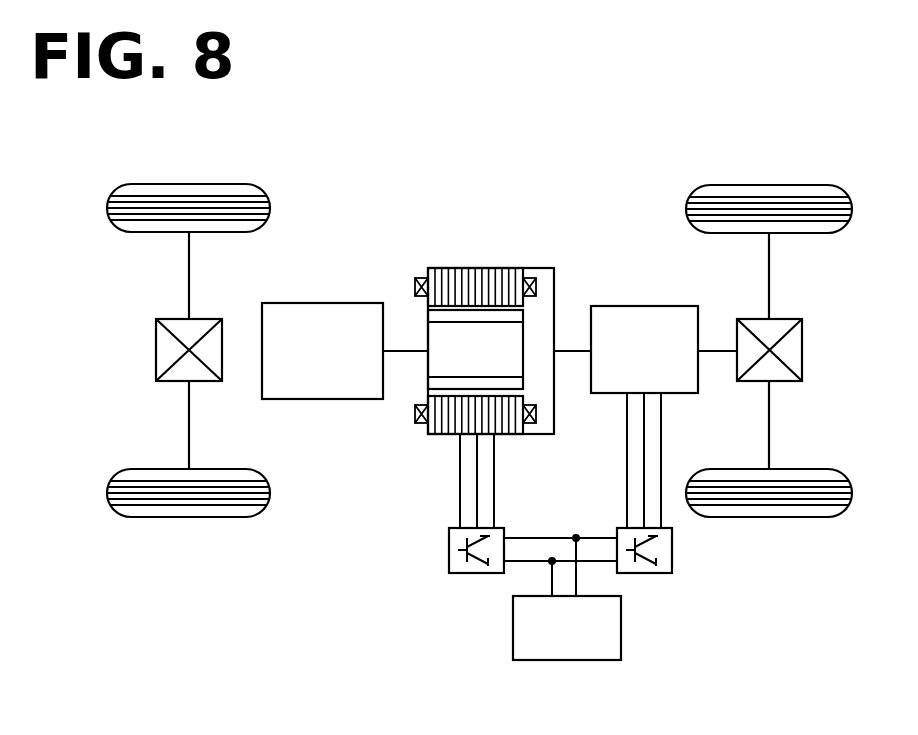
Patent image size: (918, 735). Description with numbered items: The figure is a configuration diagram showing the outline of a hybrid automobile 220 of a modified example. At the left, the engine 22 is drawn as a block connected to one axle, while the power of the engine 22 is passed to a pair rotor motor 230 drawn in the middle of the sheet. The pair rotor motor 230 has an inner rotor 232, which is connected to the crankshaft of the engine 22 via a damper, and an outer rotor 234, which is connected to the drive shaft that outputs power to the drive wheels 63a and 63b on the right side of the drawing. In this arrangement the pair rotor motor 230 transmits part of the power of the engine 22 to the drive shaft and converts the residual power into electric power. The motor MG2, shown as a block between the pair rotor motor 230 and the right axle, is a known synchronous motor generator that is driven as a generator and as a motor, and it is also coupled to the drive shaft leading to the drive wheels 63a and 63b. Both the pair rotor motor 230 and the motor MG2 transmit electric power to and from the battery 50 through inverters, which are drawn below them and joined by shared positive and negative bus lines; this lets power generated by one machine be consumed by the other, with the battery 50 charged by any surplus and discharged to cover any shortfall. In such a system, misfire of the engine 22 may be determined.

The engine 22 is at (322, 399).
The hybrid automobile 220 is at (583, 192).
The pair rotor motor 230 is at (461, 296).
The inner rotor 232 is at (428, 336).
The outer rotor 234 is at (478, 268).
The motor MG2 is at (643, 306).
The drive wheel 63a is at (769, 185).
The drive wheel 63b is at (769, 517).
The battery 50 is at (621, 623).